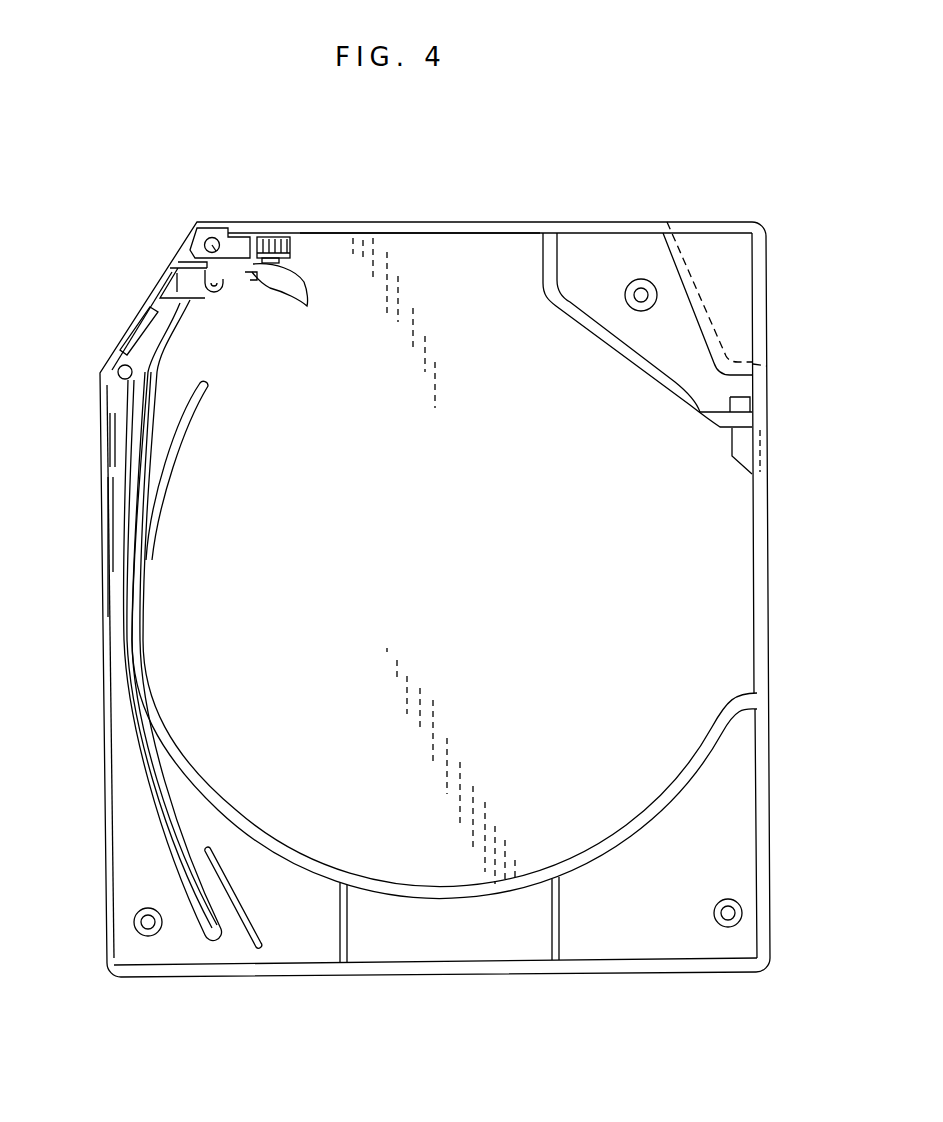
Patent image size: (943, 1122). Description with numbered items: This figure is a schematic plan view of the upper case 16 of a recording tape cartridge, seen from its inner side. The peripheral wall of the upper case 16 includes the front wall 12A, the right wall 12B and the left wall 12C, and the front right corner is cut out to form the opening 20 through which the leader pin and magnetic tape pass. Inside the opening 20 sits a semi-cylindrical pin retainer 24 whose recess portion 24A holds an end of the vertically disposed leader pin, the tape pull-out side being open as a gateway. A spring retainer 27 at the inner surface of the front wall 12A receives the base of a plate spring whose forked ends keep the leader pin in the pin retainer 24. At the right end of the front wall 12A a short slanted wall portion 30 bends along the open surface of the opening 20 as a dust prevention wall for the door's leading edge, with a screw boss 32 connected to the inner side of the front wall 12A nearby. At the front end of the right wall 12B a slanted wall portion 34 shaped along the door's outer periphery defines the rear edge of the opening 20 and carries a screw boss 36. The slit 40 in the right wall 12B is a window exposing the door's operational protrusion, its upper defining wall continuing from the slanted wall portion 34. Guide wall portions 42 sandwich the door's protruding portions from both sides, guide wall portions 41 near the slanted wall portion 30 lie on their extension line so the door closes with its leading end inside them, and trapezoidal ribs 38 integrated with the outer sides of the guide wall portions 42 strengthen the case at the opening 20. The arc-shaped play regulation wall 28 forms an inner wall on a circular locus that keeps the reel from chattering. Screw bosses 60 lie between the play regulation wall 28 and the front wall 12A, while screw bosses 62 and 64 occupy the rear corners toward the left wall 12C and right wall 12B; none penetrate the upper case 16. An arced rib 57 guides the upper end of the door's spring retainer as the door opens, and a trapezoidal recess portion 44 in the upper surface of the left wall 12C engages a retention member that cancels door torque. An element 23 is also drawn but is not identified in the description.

The upper case 16 is at (534, 150).
The front wall 12A is at (448, 221).
The right wall 12B is at (103, 677).
The left wall 12C is at (768, 603).
The opening 20 is at (152, 291).
The rack portion 23 is at (252, 238).
The pin retainer 24 is at (228, 292).
The recess portion 24A is at (208, 298).
The spring retainer 27 is at (281, 297).
The play regulation wall 28 is at (627, 352).
The slanted wall portion 30 is at (190, 242).
The screw boss 32 is at (214, 237).
The slanted wall portion 34 is at (138, 435).
The screw boss 36 is at (118, 372).
The rib 38 is at (130, 322).
The slit 40 is at (106, 585).
The guide wall portion 41 is at (178, 264).
The guide wall portion 42 is at (170, 856).
The recess portion 44 is at (746, 433).
The rib 57 is at (250, 911).
The screw boss 60 is at (641, 279).
The screw boss 62 is at (743, 913).
The screw boss 64 is at (134, 922).